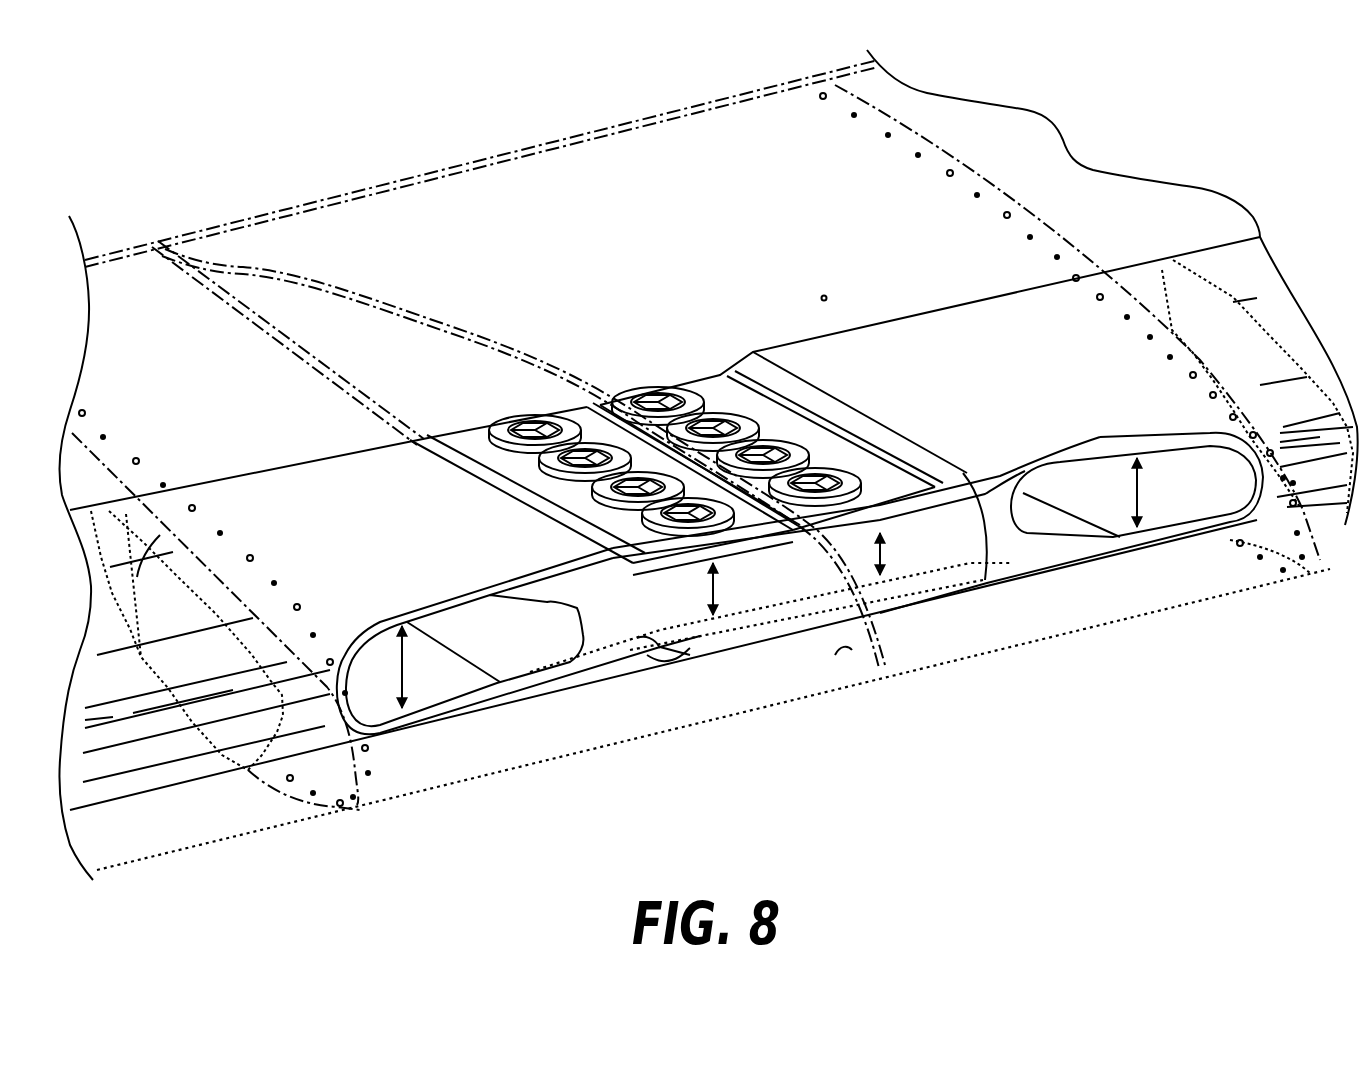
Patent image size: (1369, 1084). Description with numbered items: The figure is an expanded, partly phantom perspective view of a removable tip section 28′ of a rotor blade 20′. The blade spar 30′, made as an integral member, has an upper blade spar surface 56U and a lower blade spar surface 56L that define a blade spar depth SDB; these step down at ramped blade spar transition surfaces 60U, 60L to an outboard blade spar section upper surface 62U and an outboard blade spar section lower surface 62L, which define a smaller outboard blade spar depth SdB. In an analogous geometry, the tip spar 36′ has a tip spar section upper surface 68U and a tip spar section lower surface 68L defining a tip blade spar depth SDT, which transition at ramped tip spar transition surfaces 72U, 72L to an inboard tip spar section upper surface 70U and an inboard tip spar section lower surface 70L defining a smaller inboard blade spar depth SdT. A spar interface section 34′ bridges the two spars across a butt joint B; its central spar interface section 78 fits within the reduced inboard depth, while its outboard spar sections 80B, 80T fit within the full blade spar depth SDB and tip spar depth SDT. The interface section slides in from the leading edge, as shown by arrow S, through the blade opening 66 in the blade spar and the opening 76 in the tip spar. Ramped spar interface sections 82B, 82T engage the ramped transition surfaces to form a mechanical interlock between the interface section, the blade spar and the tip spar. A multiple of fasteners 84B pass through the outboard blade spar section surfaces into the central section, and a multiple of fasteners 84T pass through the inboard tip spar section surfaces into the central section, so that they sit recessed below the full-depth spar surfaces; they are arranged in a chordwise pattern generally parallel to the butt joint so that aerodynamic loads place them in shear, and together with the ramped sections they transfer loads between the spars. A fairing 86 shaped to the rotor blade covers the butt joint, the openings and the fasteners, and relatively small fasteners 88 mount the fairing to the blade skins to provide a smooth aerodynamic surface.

The rotor blade 20′ is at (945, 133).
The removable tip section 28′ is at (1038, 200).
The tip spar 36′ is at (1128, 265).
The fairing 86 is at (660, 204).
The fasteners 88 is at (826, 298).
The butt joint B is at (243, 270).
The fasteners 84B is at (499, 417).
The fasteners 84T is at (620, 388).
The upper blade spar surface 56U is at (137, 577).
The outboard blade spar section upper surface 62U is at (606, 540).
The ramped spar interface section 82B is at (597, 543).
The outboard spar section 80B is at (493, 645).
The ramped blade spar transition surface 60U is at (479, 642).
The inboard tip spar section upper surface 70U is at (880, 487).
The ramped spar interface section 82T is at (937, 483).
The ramped tip spar transition surface 72U is at (978, 468).
The tip spar section upper surface 68U is at (1210, 433).
The opening 76 is at (1192, 504).
The tip blade spar depth SDT is at (1143, 523).
The inboard blade spar depth SdT is at (915, 554).
The outboard blade spar depth SdB is at (746, 589).
The blade spar depth SDB is at (403, 712).
The outboard spar section 80T is at (1023, 533).
The tip spar section lower surface 68L is at (1225, 545).
The ramped tip spar transition surface 72L is at (977, 573).
The inboard tip spar section lower surface 70L is at (838, 655).
The arrow S is at (922, 634).
The spar interface section 34′ is at (793, 592).
The central spar interface section 78 is at (700, 610).
The ramped blade spar transition surface 60L is at (620, 678).
The outboard blade spar section lower surface 62L is at (670, 655).
The blade opening 66 is at (207, 733).
The lower blade spar surface 56L is at (277, 765).
The blade spar 30′ is at (117, 810).